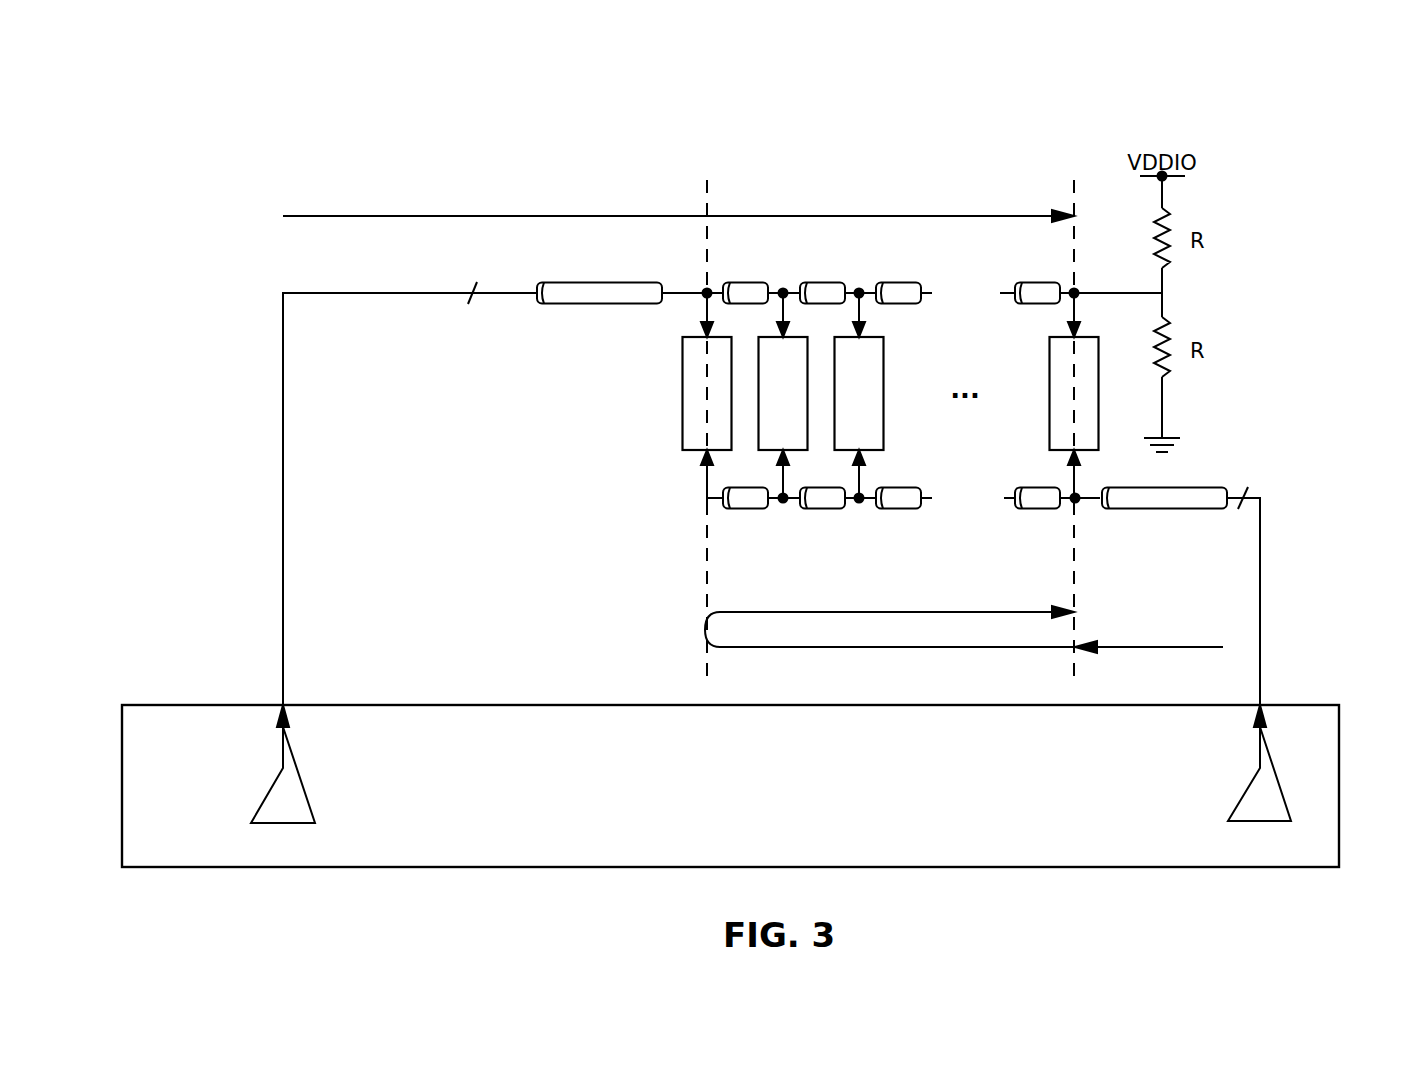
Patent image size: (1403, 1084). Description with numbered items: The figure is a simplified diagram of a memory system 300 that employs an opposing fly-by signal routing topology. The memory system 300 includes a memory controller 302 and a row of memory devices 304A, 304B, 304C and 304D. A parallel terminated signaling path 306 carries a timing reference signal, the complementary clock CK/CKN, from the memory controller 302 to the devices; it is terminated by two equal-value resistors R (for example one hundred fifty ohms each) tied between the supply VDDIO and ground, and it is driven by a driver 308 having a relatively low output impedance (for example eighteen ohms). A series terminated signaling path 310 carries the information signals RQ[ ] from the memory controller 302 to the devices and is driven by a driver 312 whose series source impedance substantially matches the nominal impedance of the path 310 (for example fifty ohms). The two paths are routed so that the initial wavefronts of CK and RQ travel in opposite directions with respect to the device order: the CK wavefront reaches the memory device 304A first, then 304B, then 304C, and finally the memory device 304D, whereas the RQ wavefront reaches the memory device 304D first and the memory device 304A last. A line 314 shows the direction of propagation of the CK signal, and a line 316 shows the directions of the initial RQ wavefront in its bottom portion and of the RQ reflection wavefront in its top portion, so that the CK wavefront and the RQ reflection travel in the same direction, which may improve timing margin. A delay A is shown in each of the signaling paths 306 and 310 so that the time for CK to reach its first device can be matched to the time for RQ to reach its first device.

The memory system 300 is at (732, 101).
The memory controller 302 is at (750, 810).
The memory device 304A is at (683, 385).
The memory device 304B is at (762, 452).
The memory device 304C is at (884, 365).
The memory device 304D is at (1050, 395).
The parallel terminated signaling path 306 is at (283, 473).
The driver 308 is at (300, 793).
The series terminated signaling path 310 is at (1260, 608).
The driver 312 is at (1243, 790).
The line 314 is at (665, 216).
The line 316 is at (705, 626).